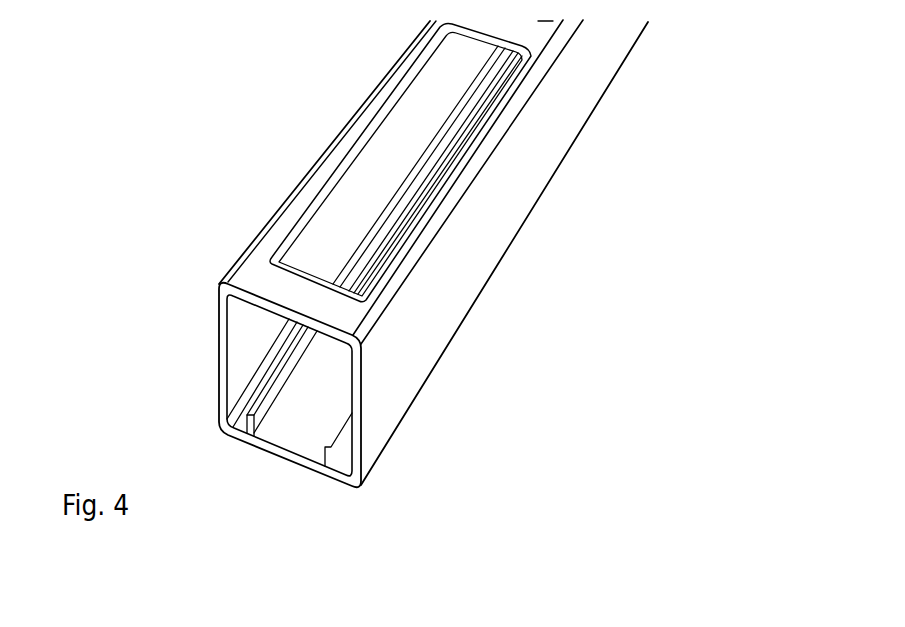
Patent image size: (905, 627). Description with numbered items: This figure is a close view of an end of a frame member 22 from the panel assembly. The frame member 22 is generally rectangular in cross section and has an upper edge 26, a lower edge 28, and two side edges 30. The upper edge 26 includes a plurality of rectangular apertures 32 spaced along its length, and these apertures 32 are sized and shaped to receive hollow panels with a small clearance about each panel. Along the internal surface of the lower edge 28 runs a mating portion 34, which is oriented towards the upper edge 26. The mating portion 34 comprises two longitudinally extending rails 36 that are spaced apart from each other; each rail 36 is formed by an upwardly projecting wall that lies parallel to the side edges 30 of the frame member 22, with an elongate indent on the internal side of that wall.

The frame member 22 is at (562, 133).
The upper edge 26 is at (283, 280).
The lower edge 28 is at (310, 446).
The side edges 30 is at (385, 133).
The rectangular apertures 32 is at (433, 82).
The mating portion 34 is at (250, 432).
The rails 36 is at (260, 407).